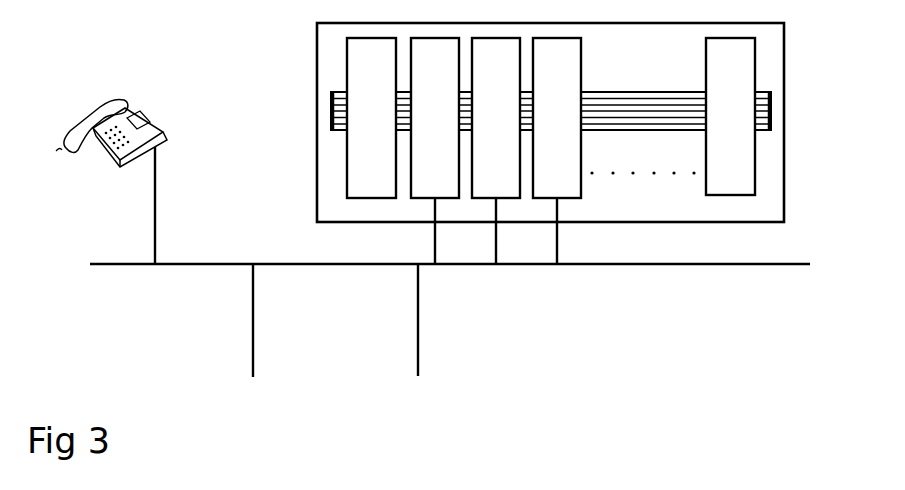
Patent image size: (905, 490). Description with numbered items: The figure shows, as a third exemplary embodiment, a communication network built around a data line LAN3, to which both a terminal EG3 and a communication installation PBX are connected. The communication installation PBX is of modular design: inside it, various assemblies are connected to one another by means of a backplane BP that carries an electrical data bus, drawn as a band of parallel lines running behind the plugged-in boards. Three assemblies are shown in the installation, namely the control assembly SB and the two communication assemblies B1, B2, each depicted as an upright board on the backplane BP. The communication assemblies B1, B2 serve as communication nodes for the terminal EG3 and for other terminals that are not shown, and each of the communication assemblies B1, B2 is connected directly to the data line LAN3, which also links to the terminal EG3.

The communication installation PBX is at (590, 133).
The backplane BP is at (772, 125).
The control assembly SB is at (371, 118).
The communication assembly B1 is at (435, 151).
The communication assembly B2 is at (496, 151).
The terminal EG3 is at (97, 120).
The data line LAN3 is at (135, 265).